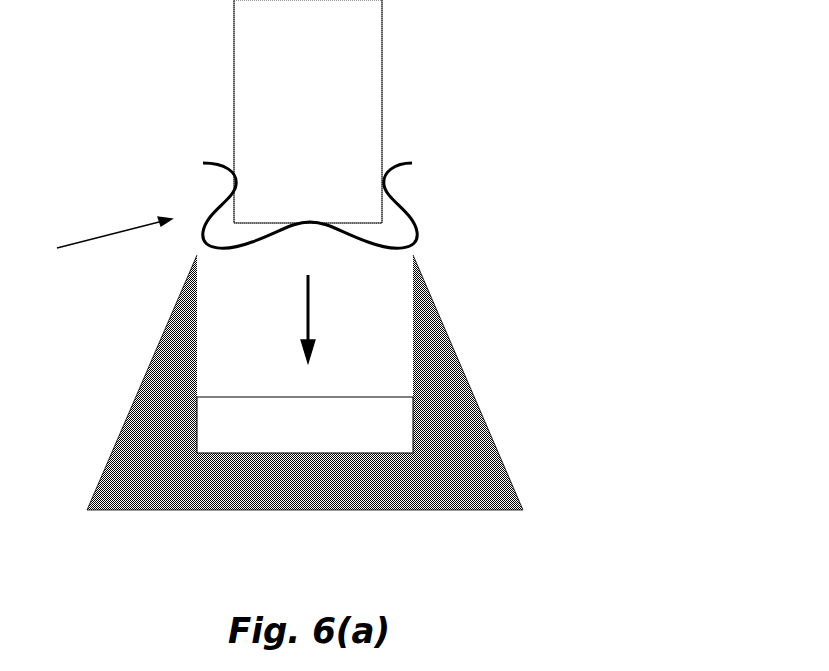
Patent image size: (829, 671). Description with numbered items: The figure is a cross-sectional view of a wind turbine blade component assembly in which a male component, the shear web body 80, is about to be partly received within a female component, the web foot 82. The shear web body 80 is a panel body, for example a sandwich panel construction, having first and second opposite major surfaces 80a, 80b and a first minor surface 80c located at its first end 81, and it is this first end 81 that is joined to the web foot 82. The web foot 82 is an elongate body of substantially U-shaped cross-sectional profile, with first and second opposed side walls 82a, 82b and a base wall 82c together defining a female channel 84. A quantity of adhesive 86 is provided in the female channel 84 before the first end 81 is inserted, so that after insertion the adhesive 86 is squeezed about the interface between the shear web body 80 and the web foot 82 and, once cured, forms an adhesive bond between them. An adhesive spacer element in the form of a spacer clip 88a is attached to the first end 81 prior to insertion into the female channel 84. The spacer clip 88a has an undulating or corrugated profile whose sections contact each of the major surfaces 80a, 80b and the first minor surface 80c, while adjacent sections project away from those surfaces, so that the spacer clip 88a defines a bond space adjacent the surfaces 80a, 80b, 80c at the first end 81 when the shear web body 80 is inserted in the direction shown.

The shear web body 80 is at (369, 111).
The first major surface 80a is at (144, 111).
The second major surface 80b is at (454, 111).
The first minor surface 80c is at (260, 222).
The first end 81 is at (92, 240).
The web foot 82 is at (313, 433).
The first side wall 82a is at (111, 382).
The second side wall 82b is at (490, 382).
The base wall 82c is at (305, 520).
The female channel 84 is at (305, 326).
The adhesive 86 is at (309, 490).
The spacer clip 88a is at (368, 205).